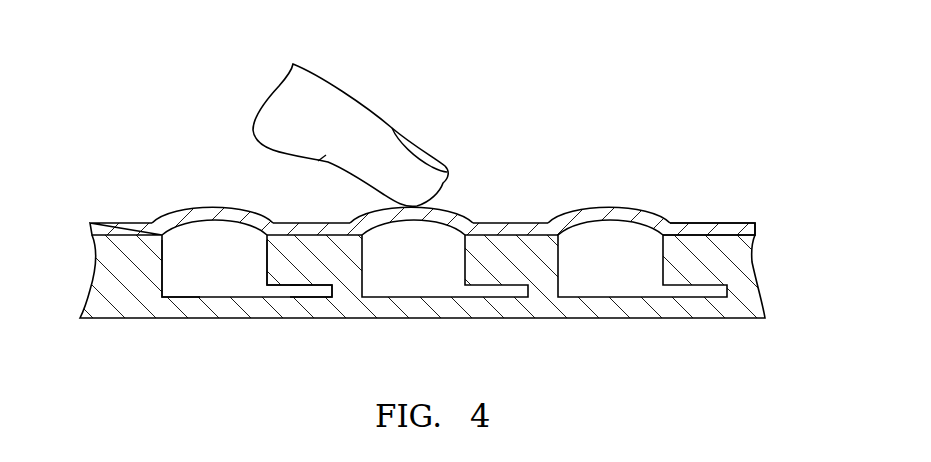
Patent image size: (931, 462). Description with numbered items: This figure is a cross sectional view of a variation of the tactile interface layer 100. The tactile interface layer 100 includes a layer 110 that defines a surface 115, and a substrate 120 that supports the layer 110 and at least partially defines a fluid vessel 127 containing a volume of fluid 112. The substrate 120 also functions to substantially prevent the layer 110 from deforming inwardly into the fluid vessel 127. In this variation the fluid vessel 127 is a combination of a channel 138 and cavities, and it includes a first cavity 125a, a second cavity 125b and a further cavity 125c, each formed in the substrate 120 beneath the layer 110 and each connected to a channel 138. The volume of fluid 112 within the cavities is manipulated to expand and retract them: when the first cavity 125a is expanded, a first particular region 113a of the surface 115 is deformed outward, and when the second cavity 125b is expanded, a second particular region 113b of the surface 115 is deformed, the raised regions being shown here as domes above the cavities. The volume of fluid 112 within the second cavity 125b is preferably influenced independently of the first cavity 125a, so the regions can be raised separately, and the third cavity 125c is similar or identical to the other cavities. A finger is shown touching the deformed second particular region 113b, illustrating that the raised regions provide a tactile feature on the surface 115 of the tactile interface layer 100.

The tactile interface layer 100 is at (647, 146).
The layer 110 is at (733, 230).
The volume of fluid 112 is at (192, 288).
The first particular region 113a is at (213, 200).
The second particular region 113b is at (448, 200).
The surface 115 is at (120, 222).
The substrate 120 is at (728, 268).
The first cavity 125a is at (243, 264).
The second cavity 125b is at (438, 262).
The third cavity 125c is at (638, 263).
The fluid vessel 127 is at (288, 292).
The channel 138 is at (308, 292).